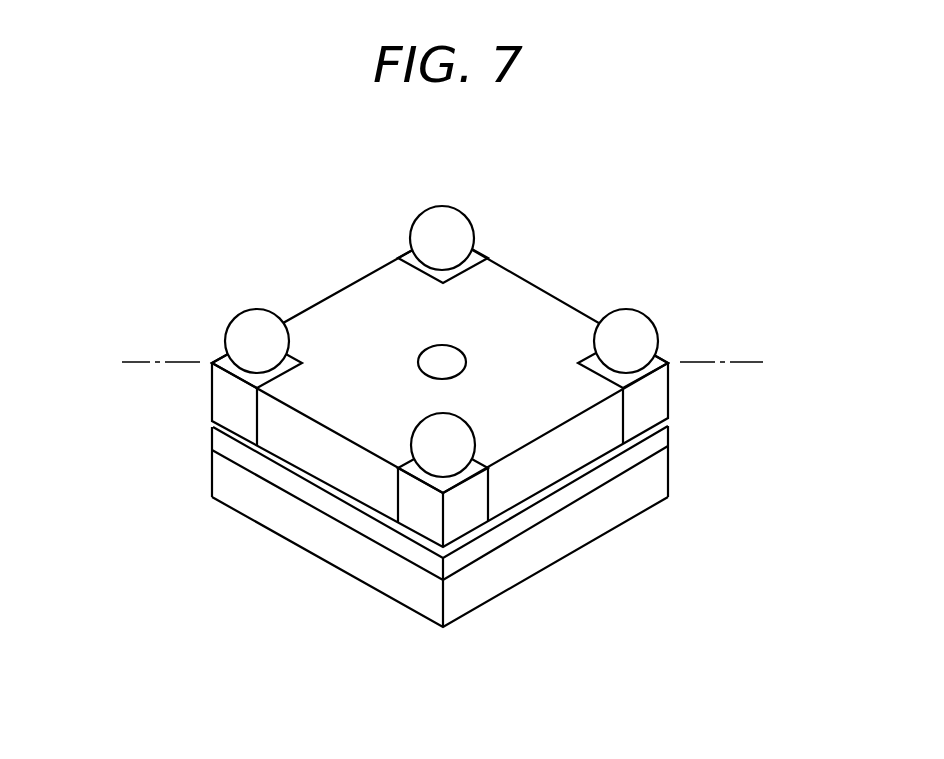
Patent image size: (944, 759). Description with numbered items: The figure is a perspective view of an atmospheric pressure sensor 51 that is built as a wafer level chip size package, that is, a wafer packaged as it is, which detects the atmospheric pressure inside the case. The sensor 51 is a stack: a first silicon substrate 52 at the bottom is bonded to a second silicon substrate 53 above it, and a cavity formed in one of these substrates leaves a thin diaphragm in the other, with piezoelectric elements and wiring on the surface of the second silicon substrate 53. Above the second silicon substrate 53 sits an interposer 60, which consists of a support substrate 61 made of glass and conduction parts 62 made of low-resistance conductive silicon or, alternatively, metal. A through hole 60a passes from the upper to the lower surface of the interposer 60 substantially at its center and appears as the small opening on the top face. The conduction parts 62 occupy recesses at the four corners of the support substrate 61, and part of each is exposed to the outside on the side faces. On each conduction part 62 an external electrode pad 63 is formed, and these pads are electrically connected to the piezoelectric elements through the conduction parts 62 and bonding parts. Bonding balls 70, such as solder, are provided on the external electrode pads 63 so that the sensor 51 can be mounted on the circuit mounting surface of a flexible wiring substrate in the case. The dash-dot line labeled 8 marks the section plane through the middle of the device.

The atmospheric pressure sensor 51 is at (273, 134).
The first silicon substrate 52 is at (662, 487).
The second silicon substrate 53 is at (663, 442).
The interposer 60 is at (440, 350).
The through hole 60a is at (485, 351).
The support substrate 61 is at (527, 293).
The conduction part 62 is at (222, 400).
The external electrode pad 63 is at (408, 252).
The bonding ball 70 is at (441, 218).
The section line 8- 8 is at (443, 362).